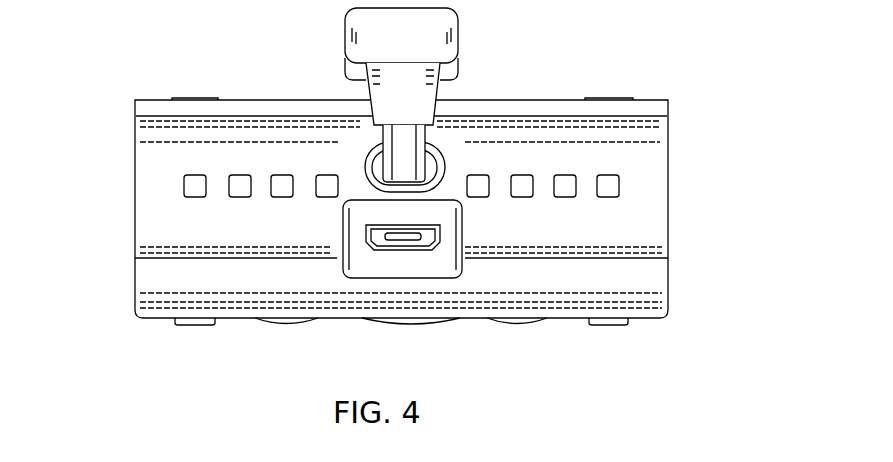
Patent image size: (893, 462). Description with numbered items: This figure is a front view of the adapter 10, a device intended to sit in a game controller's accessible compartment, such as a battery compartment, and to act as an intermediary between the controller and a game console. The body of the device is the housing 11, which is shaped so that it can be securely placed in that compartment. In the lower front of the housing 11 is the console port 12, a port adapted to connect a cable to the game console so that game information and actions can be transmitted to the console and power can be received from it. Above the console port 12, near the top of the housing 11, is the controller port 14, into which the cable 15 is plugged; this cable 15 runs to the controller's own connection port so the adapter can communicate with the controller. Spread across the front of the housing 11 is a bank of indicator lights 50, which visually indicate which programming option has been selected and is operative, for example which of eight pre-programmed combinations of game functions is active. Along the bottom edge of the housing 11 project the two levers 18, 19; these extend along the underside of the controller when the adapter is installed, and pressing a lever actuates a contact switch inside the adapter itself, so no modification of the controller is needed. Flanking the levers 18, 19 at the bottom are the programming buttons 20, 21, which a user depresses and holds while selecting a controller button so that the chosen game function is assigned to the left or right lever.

The adapter 10 is at (461, 208).
The housing 11 is at (642, 154).
The console port 12 is at (386, 256).
The controller port 14 is at (431, 169).
The cable 15 is at (387, 146).
The lever 18 is at (512, 328).
The lever 19 is at (278, 328).
The programming button 20 is at (606, 328).
The programming button 21 is at (191, 328).
The indicator lights 50 is at (226, 212).